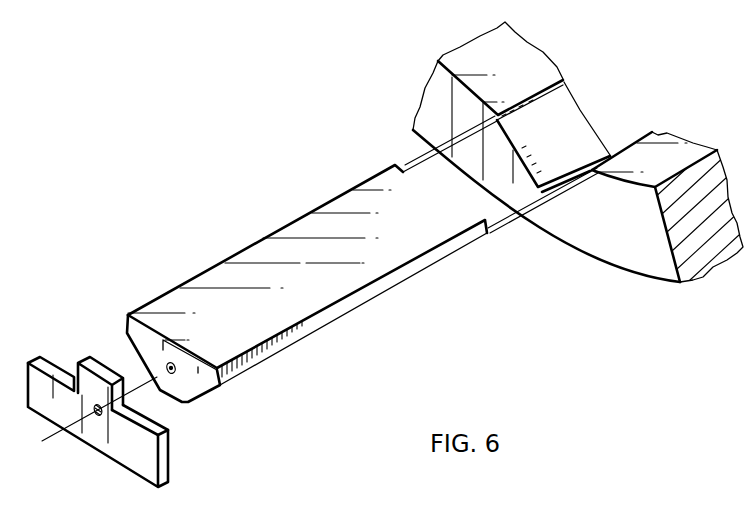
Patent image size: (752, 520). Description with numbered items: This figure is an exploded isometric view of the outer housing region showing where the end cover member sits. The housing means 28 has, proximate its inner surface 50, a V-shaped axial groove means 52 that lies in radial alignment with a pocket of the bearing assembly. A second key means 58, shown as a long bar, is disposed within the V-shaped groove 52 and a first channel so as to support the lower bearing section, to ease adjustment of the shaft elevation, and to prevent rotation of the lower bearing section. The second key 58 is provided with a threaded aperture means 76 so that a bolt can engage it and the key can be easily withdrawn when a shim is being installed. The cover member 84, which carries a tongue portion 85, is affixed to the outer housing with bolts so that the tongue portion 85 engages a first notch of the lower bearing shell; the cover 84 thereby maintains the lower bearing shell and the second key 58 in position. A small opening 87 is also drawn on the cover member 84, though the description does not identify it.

The base body 28 is at (533, 68).
The clamp block 50 is at (670, 158).
The wear plate 52 is at (560, 132).
The guide bar 58 is at (257, 250).
The hole in guide bar 76 is at (175, 372).
The stop plate 84 is at (145, 468).
The lug 85 is at (93, 385).
The hole in stop plate 87 is at (98, 415).